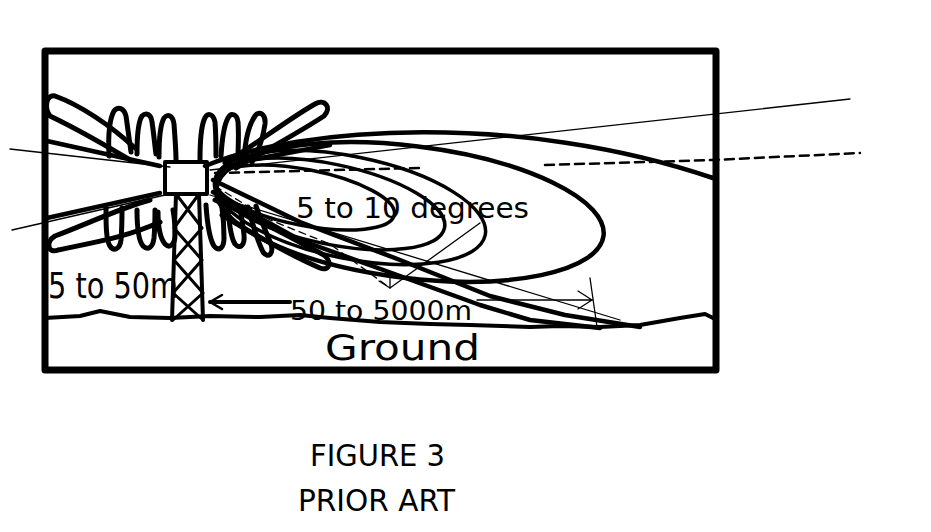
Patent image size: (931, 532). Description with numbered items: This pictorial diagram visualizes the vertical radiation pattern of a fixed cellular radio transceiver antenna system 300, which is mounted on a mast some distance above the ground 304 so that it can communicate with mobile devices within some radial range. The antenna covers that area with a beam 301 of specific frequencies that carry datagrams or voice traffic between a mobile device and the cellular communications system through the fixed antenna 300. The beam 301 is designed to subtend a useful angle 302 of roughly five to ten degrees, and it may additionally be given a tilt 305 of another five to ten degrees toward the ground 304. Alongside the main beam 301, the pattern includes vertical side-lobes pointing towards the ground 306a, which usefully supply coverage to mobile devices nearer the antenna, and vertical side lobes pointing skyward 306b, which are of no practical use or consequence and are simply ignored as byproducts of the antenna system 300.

The fixed cellular radio transceiver antenna system 300 is at (185, 158).
The beam 301 is at (461, 212).
The useful angle 302 is at (365, 177).
The ground 304 is at (128, 294).
The tilt 305 is at (527, 183).
The vertical side-lobes pointing towards the ground 306a is at (228, 247).
The vertical side lobes pointing skyward 306b is at (264, 113).